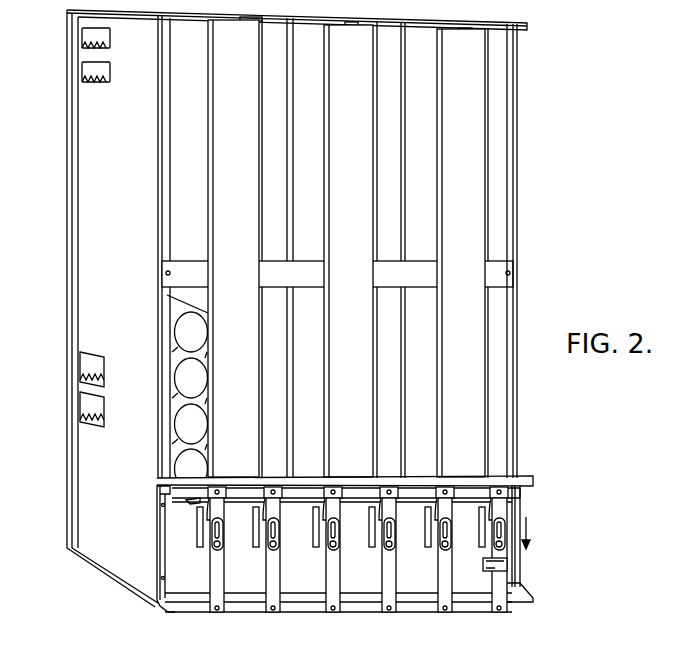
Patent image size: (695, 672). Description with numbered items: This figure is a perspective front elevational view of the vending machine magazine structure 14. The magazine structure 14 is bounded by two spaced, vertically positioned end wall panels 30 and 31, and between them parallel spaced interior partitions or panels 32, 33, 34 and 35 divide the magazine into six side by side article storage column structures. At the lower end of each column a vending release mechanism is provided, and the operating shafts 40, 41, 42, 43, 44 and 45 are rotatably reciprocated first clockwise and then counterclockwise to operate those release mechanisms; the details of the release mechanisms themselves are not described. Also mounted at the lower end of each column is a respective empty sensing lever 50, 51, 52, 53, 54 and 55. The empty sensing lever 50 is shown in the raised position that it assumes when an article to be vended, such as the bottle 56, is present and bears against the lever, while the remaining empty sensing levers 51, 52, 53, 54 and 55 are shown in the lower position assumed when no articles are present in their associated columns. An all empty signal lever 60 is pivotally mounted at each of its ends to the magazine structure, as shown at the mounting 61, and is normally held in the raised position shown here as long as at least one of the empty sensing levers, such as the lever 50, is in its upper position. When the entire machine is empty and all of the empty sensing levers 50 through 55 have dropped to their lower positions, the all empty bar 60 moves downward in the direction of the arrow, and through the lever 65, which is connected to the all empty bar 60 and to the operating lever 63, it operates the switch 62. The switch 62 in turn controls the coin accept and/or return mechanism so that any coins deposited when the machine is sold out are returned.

The magazine structure 14 is at (362, 119).
The end wall panel 30 is at (86, 223).
The end wall panel 31 is at (510, 181).
The interior partition 32 is at (175, 131).
The interior partition 33 is at (271, 162).
The interior partition 34 is at (340, 187).
The interior partition 35 is at (427, 203).
The operating shaft 40 is at (213, 549).
The operating shaft 41 is at (272, 549).
The operating shaft 42 is at (329, 550).
The operating shaft 43 is at (386, 550).
The operating shaft 44 is at (441, 550).
The operating shaft 45 is at (495, 541).
The empty sensing lever 50 is at (197, 520).
The empty sensing lever 51 is at (262, 520).
The empty sensing lever 52 is at (322, 519).
The empty sensing lever 53 is at (380, 517).
The empty sensing lever 54 is at (437, 518).
The empty sensing lever 55 is at (490, 512).
The bottle 56 is at (178, 466).
The all empty signal lever 60 is at (300, 495).
The pivot mounting 61 is at (190, 502).
The switch 62 is at (507, 571).
The operating lever 63 is at (506, 580).
The lever 65 is at (522, 553).